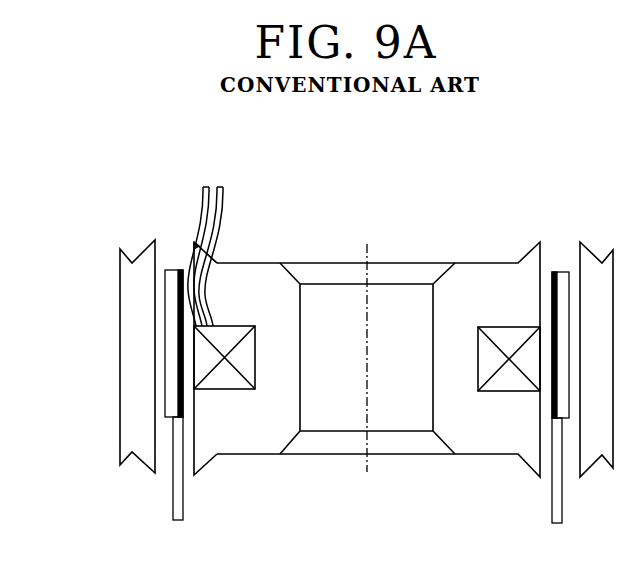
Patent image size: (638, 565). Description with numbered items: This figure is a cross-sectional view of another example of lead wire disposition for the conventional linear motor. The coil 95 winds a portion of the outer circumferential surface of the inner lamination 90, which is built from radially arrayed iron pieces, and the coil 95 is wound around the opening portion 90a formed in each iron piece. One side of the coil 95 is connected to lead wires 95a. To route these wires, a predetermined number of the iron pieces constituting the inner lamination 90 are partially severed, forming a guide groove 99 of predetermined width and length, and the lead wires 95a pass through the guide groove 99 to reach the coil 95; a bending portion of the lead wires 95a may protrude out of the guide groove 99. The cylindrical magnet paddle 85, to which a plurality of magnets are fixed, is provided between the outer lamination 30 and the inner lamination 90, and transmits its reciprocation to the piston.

The outer lamination 30 is at (128, 308).
The magnet paddle 85 is at (170, 285).
The inner lamination 90 is at (272, 455).
The opening portion 90a is at (195, 387).
The coil 95 is at (225, 385).
The lead wires 95a is at (205, 202).
The guide groove 99 is at (212, 260).